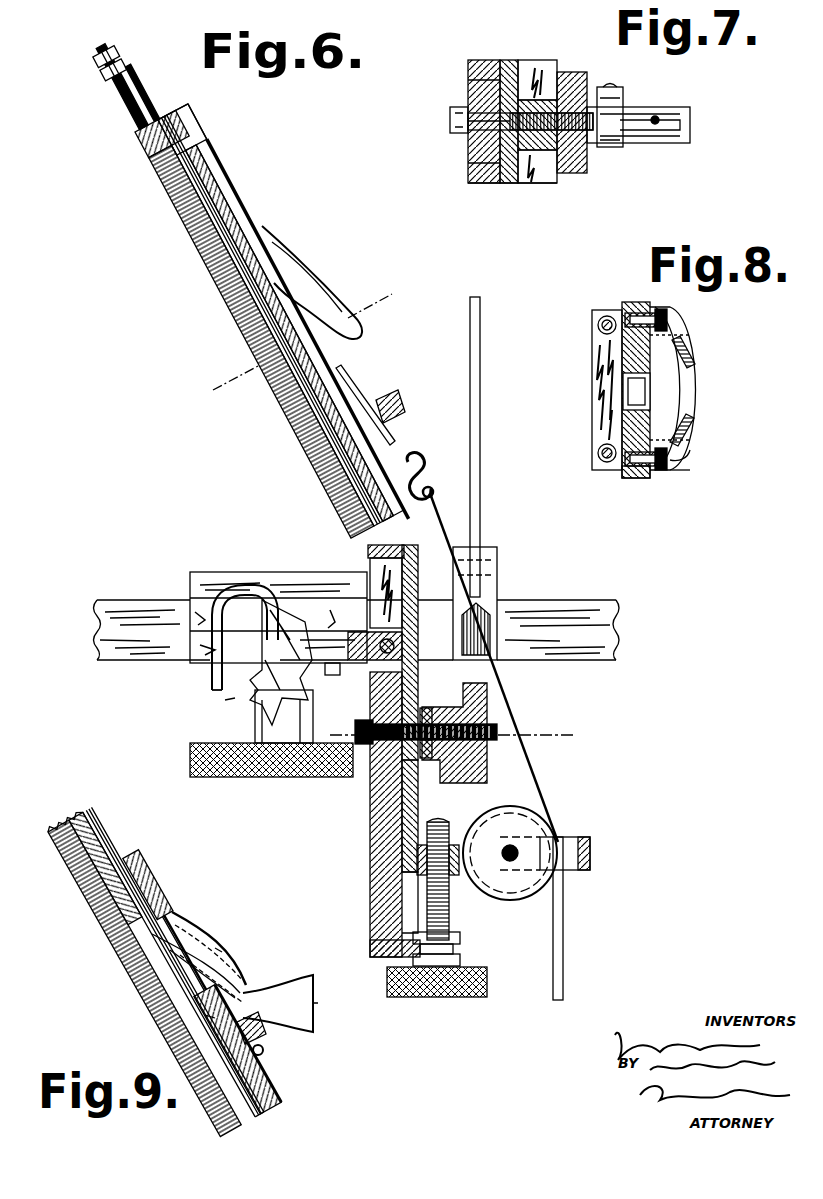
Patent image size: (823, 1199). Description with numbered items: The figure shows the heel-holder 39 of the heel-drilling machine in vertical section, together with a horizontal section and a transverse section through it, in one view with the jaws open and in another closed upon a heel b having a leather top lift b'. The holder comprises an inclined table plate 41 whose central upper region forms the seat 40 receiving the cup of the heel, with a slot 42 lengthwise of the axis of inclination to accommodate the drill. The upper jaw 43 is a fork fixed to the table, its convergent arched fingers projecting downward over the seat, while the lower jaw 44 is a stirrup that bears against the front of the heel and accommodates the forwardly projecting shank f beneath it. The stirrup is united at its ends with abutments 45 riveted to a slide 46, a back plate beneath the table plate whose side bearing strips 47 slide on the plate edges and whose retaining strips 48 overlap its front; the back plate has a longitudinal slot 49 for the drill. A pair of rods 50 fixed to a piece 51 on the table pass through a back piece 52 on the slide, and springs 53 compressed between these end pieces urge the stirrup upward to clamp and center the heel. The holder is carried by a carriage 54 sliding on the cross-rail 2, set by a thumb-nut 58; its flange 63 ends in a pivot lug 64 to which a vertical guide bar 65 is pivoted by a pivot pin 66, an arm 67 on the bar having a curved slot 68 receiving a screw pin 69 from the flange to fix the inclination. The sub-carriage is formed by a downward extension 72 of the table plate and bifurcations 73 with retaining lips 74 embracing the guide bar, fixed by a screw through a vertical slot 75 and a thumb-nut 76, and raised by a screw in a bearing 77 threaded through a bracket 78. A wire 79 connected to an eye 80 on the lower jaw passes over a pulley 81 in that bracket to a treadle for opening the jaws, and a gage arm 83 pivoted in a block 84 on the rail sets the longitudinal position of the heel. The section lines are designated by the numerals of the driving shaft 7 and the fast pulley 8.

In FIG. 6, the cross-rail 2 is at (124, 608).
In FIG. 6, the driving shaft 7 is at (449, 734).
In FIG. 7, the driving shaft 7 is at (475, 186).
In FIG. 6, the fast pulley 8 is at (294, 338).
In FIG. 6, the heel-holder 39 is at (324, 342).
In FIG. 8, the heel-holder 39 is at (666, 410).
In FIG. 9, the heel-holder 39 is at (266, 1115).
In FIG. 8, the seat 40 is at (682, 460).
In FIG. 9, the seat 40 is at (262, 1090).
In FIG. 6, the table plate 41 is at (408, 575).
In FIG. 7, the table plate 41 is at (503, 185).
In FIG. 8, the table plate 41 is at (625, 472).
In FIG. 9, the table plate 41 is at (110, 850).
In FIG. 6, the slot 42 is at (270, 337).
In FIG. 8, the slot 42 is at (652, 388).
In FIG. 9, the slot 42 is at (167, 963).
In FIG. 6, the upper jaw 43 is at (350, 306).
In FIG. 8, the upper jaw 43 is at (690, 350).
In FIG. 9, the upper jaw 43 is at (230, 965).
In FIG. 6, the lower jaw 44 is at (400, 408).
In FIG. 8, the lower jaw 44 is at (680, 472).
In FIG. 9, the lower jaw 44 is at (268, 1030).
In FIG. 6, the abutments 45 is at (358, 397).
In FIG. 8, the abutments 45 is at (668, 312).
In FIG. 9, the abutments 45 is at (222, 981).
In FIG. 6, the slide 46 is at (218, 238).
In FIG. 8, the slide 46 is at (625, 303).
In FIG. 9, the slide 46 is at (88, 832).
In FIG. 8, the side bearing strips 47 is at (633, 304).
In FIG. 8, the retaining strips 48 is at (650, 308).
In FIG. 6, the longitudinal slot 49 is at (300, 380).
In FIG. 8, the longitudinal slot 49 is at (624, 396).
In FIG. 9, the longitudinal slot 49 is at (125, 923).
In FIG. 6, the rods 50 is at (135, 122).
In FIG. 8, the rods 50 is at (598, 325).
In FIG. 6, the piece 51 is at (368, 551).
In FIG. 8, the piece 51 is at (605, 368).
In FIG. 6, the back piece 52 is at (144, 154).
In FIG. 6, the springs 53 is at (243, 332).
In FIG. 8, the springs 53 is at (596, 345).
In FIG. 6, the carriage 54 is at (250, 580).
In FIG. 6, the thumb-nut 58 is at (280, 777).
In FIG. 6, the flange 63 is at (205, 615).
In FIG. 6, the pivot lug 64 is at (352, 672).
In FIG. 6, the guide bar 65 is at (372, 798).
In FIG. 6, the pivot pin 66 is at (383, 678).
In FIG. 6, the arm 67 is at (256, 720).
In FIG. 6, the slot 68 is at (214, 692).
In FIG. 6, the screw pin 69 is at (230, 706).
In FIG. 6, the extension 72 is at (410, 778).
In FIG. 7, the extension 72 is at (520, 183).
In FIG. 7, the bifurcations 73 is at (480, 60).
In FIG. 6, the retaining lips 74 is at (372, 575).
In FIG. 7, the retaining lips 74 is at (468, 155).
In FIG. 6, the vertical slot 75 is at (410, 668).
In FIG. 7, the vertical slot 75 is at (530, 60).
In FIG. 6, the thumb-nut 76 is at (485, 770).
In FIG. 7, the thumb-nut 76 is at (587, 176).
In FIG. 6, the bearing 77 is at (458, 950).
In FIG. 6, the bracket 78 is at (440, 838).
In FIG. 6, the wire or cable 79 is at (563, 955).
In FIG. 7, the wire or cable 79 is at (658, 112).
In FIG. 6, the eye 80 is at (482, 633).
In FIG. 9, the eye 80 is at (262, 1054).
In FIG. 6, the pulley 81 is at (502, 883).
In FIG. 7, the pulley 81 is at (630, 128).
In FIG. 6, the gage arm 83 is at (480, 466).
In FIG. 6, the block 84 is at (496, 575).
In FIG. 9, the heel b is at (278, 997).
In FIG. 9, the top lift b' is at (330, 1003).
In FIG. 9, the lever edge l is at (212, 955).
In FIG. 9, the shank f is at (218, 1026).